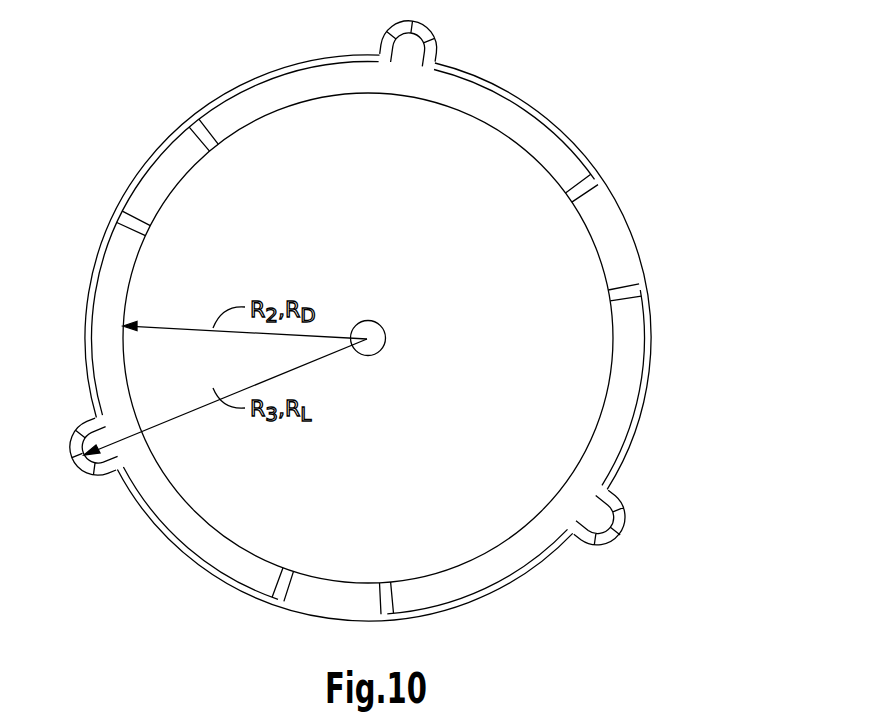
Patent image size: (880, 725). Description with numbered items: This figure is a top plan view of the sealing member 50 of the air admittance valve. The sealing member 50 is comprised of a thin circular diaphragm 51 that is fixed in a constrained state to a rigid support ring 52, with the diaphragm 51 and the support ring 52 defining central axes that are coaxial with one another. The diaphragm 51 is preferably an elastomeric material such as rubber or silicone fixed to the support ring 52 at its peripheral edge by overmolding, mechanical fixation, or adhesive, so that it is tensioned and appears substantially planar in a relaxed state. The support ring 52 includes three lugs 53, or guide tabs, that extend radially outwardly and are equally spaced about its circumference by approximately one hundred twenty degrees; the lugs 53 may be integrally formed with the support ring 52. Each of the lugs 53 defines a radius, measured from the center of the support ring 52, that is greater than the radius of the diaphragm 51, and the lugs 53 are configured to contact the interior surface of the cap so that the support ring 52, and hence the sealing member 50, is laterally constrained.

The sealing member 50 is at (658, 360).
The diaphragm 51 is at (410, 290).
The support ring 52 is at (613, 417).
The lugs 53 is at (408, 48).